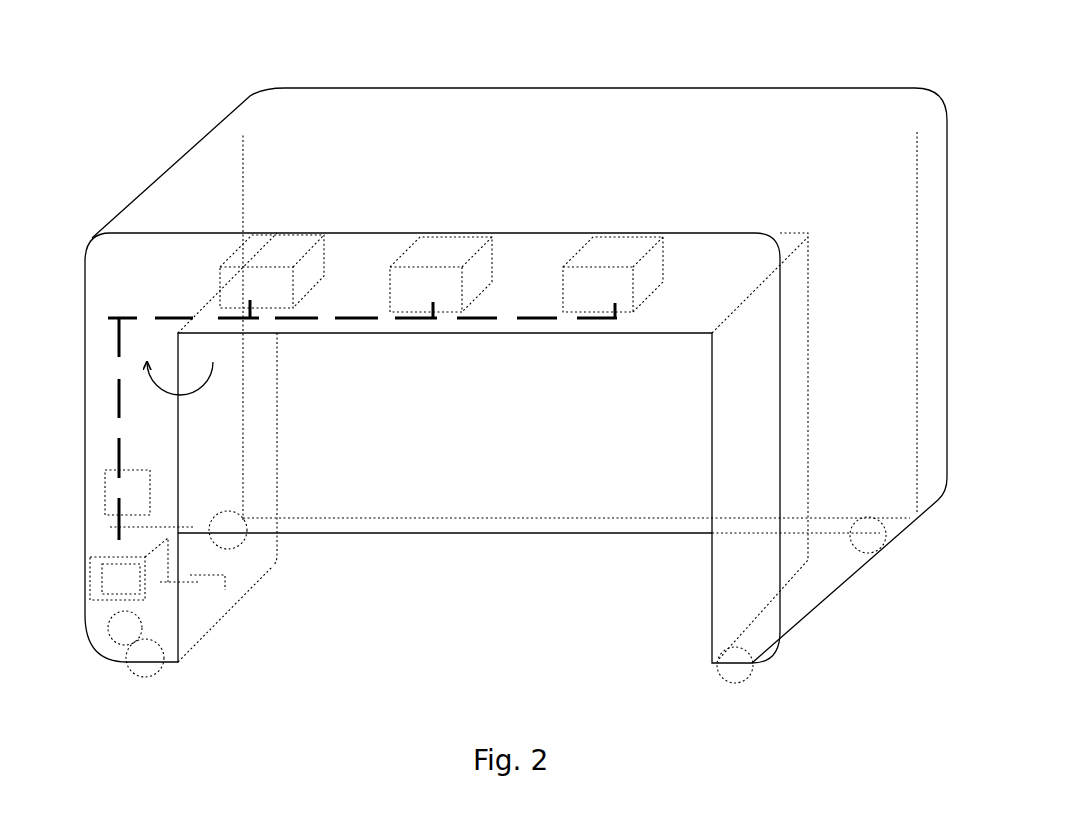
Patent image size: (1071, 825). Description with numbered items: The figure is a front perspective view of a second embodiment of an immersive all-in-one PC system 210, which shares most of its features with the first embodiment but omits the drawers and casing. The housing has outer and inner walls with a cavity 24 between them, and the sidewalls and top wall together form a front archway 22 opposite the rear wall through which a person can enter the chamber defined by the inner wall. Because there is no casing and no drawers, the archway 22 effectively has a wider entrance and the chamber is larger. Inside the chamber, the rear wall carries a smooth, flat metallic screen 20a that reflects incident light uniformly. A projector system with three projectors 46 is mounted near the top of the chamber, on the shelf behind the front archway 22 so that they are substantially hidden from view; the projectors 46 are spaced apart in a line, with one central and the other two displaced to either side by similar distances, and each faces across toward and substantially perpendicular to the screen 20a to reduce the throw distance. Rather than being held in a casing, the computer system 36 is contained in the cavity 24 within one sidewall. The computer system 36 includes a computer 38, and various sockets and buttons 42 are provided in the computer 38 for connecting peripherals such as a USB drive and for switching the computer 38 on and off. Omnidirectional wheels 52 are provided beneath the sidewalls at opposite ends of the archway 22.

The immersive all-in-one PC system 210 is at (163, 104).
The metallic screen 20a is at (503, 493).
The front archway 22 is at (710, 336).
The cavity 24 is at (148, 418).
The computer system 36 is at (243, 644).
The computer 38 is at (171, 568).
The sockets and buttons 42 is at (94, 570).
The projectors 46 is at (298, 243).
The omnidirectional wheels 52 is at (144, 677).